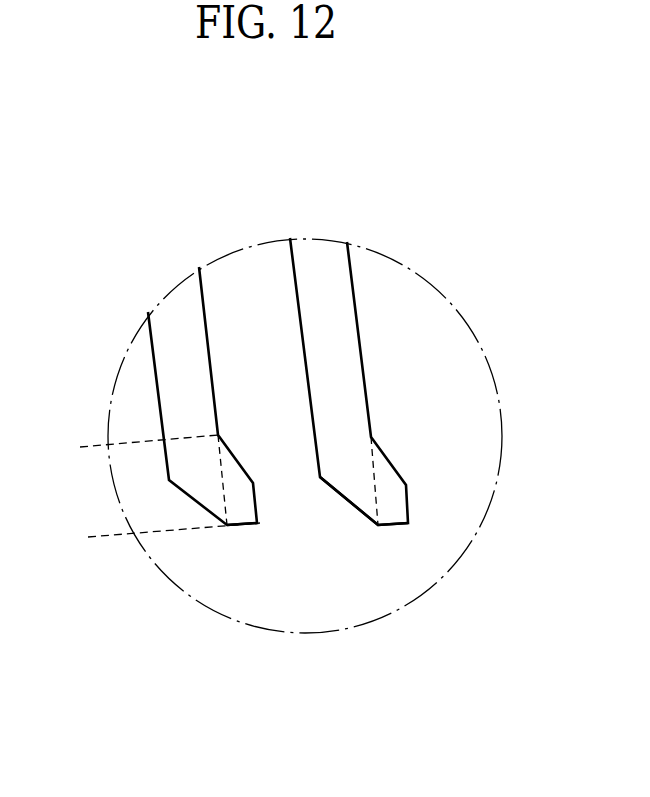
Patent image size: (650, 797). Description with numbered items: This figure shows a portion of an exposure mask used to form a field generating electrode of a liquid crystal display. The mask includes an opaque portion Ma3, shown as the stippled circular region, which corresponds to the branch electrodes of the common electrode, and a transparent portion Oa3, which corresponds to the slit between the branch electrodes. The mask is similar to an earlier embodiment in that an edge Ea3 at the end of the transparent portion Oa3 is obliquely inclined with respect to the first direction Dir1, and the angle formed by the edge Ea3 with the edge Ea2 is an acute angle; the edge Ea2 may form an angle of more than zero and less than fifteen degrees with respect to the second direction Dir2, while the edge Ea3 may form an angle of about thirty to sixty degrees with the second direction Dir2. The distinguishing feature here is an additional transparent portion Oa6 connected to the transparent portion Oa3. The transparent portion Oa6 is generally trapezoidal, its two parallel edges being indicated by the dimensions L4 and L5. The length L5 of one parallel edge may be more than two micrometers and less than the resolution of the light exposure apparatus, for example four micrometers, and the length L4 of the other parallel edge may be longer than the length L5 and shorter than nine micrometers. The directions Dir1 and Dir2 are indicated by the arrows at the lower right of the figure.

The edge Ea2 is at (357, 301).
The edge Ea3 is at (353, 547).
The opaque portion Ma3 is at (417, 307).
The transparent portion Oa3 is at (178, 373).
The additional transparent portion Oa6 is at (248, 527).
The length of parallel edge L4 is at (98, 447).
The length of parallel edge L5 is at (253, 483).
The first direction Dir1 is at (383, 708).
The second direction Dir2 is at (415, 715).